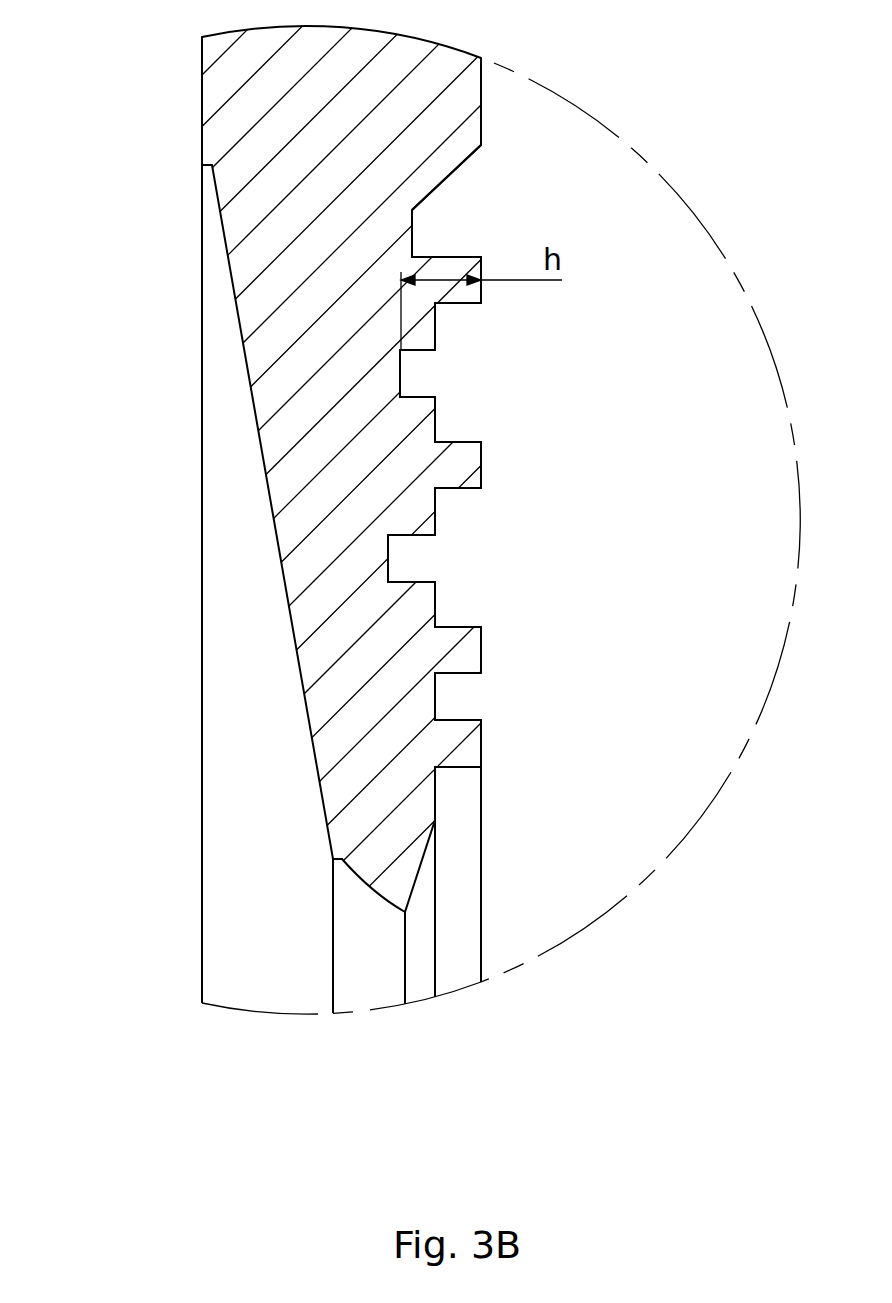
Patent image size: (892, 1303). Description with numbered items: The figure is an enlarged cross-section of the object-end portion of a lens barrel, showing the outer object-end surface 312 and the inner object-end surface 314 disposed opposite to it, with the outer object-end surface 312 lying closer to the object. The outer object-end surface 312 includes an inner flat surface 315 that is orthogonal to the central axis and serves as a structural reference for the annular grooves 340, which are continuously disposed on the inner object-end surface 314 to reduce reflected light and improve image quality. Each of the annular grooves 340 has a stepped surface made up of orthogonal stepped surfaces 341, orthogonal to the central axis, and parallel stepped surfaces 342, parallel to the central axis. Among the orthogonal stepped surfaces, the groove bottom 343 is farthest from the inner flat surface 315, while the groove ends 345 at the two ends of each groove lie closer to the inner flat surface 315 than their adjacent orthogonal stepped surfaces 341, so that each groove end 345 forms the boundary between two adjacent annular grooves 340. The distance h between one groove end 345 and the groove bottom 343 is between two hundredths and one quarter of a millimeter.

The outer object-end surface 312 is at (202, 101).
The inner object-end surface 314 is at (447, 177).
The inner flat surface 315 is at (481, 101).
The annular grooves 340 is at (632, 302).
The orthogonal stepped surfaces 341 is at (435, 420).
The parallel stepped surfaces 342 is at (458, 303).
The groove bottom 343 is at (400, 375).
The groove end 345 is at (483, 290).